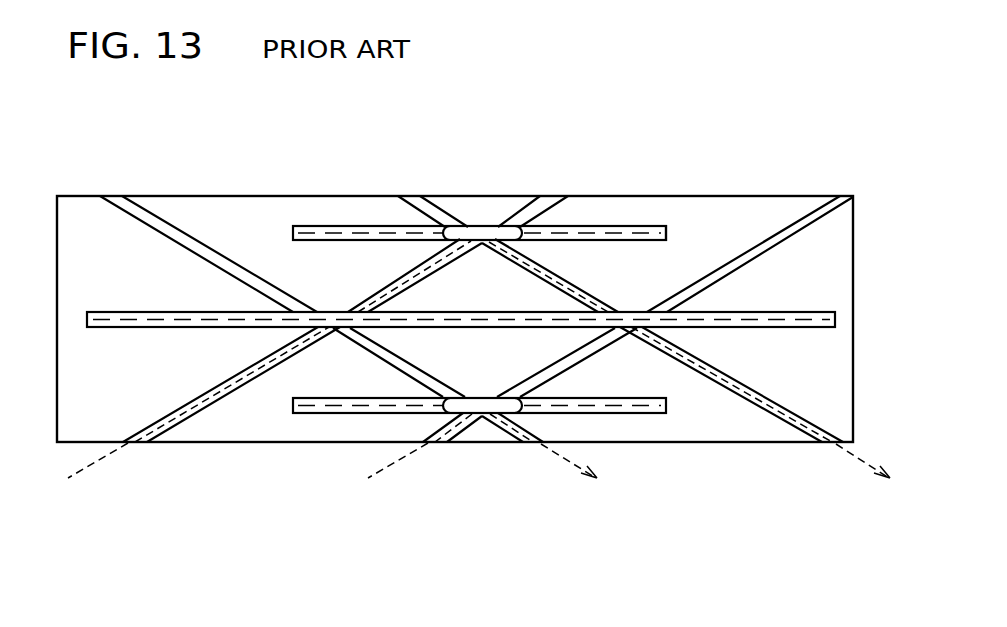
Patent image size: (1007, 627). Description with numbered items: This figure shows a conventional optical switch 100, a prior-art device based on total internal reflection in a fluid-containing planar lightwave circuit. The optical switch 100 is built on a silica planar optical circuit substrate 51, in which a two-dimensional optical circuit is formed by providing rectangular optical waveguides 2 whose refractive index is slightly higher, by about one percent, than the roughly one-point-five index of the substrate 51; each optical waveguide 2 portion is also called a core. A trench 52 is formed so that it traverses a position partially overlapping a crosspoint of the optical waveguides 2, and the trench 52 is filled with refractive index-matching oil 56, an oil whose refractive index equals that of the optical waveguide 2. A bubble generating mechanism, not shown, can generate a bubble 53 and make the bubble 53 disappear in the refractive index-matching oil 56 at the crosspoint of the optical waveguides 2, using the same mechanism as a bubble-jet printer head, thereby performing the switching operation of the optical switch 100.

The silica planar optical circuit substrate 51 is at (100, 253).
The optical waveguide 2 is at (180, 235).
The trench 52 is at (350, 232).
The bubble 53 is at (483, 232).
The refractive index-matching oil 56 is at (628, 232).
The optical switch 100 is at (808, 152).